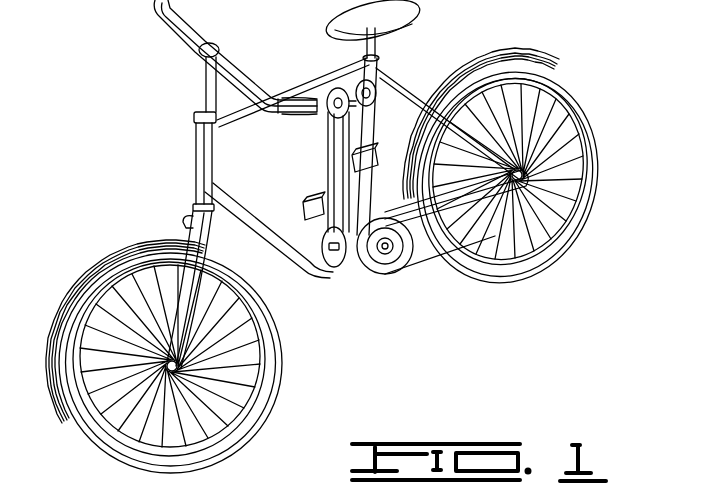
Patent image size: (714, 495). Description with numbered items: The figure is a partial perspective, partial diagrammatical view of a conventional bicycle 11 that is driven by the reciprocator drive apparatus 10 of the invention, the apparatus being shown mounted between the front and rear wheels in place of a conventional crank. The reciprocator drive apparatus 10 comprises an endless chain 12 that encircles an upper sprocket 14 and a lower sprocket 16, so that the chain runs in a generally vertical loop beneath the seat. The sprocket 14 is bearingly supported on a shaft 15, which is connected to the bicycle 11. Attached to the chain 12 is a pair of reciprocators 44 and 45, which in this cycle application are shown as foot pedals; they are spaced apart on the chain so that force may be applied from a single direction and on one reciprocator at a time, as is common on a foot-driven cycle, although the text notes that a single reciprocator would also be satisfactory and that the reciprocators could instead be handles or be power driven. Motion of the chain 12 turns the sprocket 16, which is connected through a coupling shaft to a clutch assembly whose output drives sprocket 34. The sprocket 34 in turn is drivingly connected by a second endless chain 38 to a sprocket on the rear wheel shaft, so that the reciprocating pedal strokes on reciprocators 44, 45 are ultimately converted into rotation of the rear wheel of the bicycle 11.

The reciprocator drive apparatus 10 is at (390, 103).
The bicycle 11 is at (186, 160).
The endless chain 12 is at (327, 139).
The sprocket 14 is at (338, 88).
The shaft 15 is at (372, 110).
The sprocket 16 is at (326, 240).
The sprocket 34 is at (372, 275).
The endless chain 38 is at (418, 260).
The reciprocator 44 is at (312, 198).
The reciprocator 45 is at (372, 160).